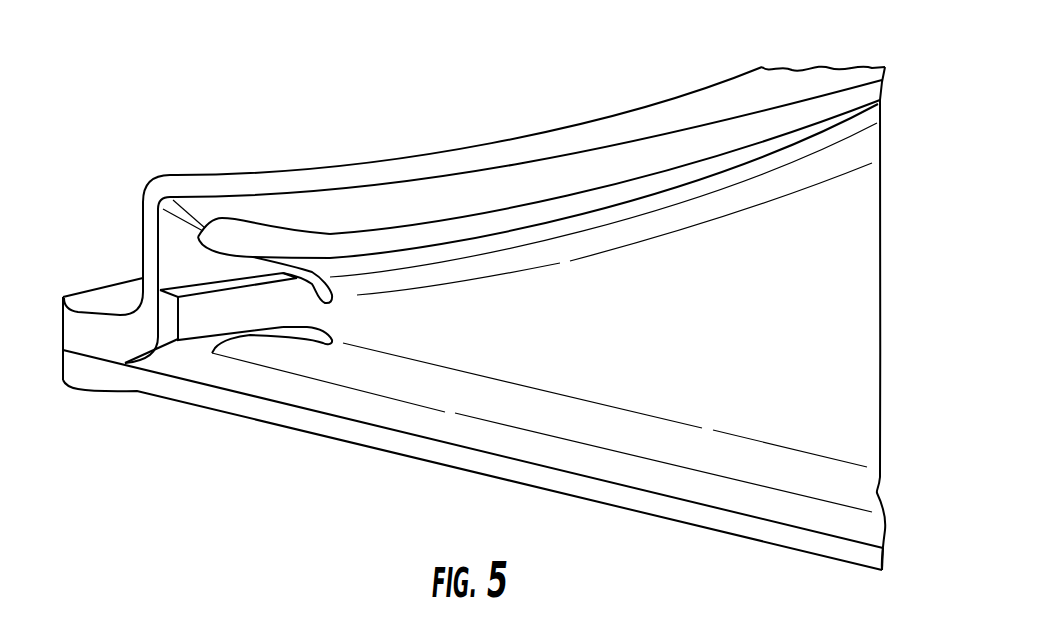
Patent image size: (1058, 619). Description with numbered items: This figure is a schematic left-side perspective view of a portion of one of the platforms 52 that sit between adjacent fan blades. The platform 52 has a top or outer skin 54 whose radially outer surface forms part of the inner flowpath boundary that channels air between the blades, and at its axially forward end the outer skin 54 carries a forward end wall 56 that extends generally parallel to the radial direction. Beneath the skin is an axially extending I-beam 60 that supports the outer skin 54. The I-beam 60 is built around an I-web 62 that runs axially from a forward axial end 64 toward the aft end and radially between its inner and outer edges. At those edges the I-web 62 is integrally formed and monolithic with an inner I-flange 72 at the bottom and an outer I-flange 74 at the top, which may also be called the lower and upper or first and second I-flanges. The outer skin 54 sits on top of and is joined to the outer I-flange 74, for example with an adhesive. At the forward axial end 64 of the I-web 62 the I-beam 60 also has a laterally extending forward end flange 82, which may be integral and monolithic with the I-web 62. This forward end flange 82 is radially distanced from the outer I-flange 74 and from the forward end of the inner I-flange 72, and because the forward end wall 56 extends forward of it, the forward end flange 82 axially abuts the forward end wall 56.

The platform 52 is at (658, 64).
The outer skin 54 is at (332, 178).
The forward end wall 56 is at (157, 253).
The I-beam 60 is at (892, 331).
The I-web 62 is at (621, 333).
The forward axial end 64 is at (165, 401).
The inner I-flange 72 is at (262, 385).
The outer I-flange 74 is at (408, 247).
The forward end flange 82 is at (203, 313).